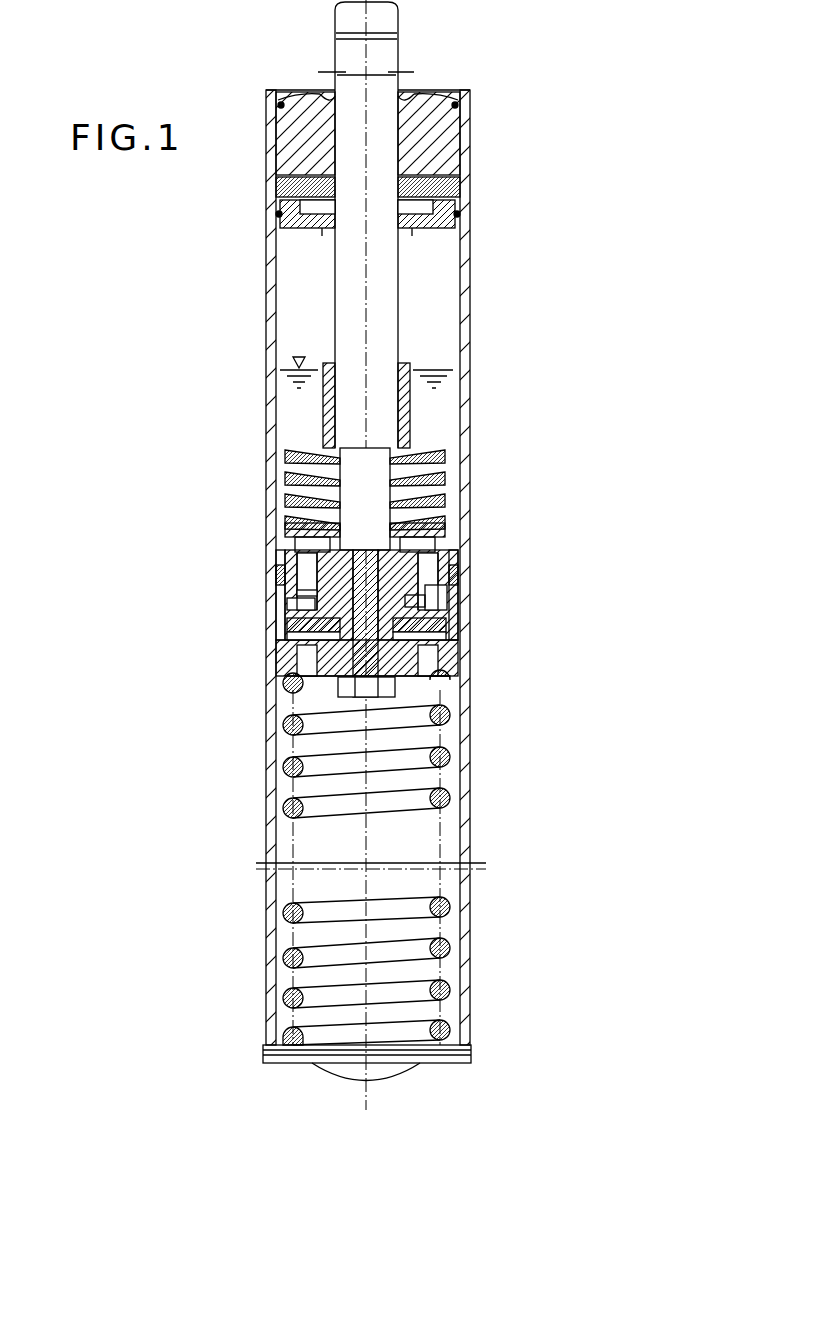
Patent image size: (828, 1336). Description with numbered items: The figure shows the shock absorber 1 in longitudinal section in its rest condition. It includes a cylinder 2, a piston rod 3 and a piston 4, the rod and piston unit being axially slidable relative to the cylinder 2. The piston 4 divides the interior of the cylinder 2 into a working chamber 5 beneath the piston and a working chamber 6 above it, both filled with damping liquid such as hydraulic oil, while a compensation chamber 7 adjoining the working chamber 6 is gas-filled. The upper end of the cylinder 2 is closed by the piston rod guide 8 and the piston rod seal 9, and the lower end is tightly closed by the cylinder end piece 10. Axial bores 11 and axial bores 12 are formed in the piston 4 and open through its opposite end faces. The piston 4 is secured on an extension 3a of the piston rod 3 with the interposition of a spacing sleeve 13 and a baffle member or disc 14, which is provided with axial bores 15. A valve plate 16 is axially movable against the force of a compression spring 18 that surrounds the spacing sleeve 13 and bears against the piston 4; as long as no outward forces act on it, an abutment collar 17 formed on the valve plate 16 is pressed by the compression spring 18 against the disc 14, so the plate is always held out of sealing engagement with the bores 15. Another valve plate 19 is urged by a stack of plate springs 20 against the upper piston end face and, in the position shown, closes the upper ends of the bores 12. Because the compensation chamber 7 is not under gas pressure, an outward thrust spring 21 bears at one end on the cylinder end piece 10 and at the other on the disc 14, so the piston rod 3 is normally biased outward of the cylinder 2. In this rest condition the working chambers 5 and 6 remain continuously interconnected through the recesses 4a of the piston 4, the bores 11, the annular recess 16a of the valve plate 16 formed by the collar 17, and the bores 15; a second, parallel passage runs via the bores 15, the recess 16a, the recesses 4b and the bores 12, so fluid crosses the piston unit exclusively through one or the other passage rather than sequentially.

The shock absorber 1 is at (255, 545).
The cylinder 2 is at (270, 282).
The piston rod 3 is at (388, 80).
The extension of the piston rod 3a is at (372, 565).
The piston 4 is at (443, 560).
The recesses of the piston 4a is at (295, 540).
The recesses of the piston 4b is at (418, 608).
The working chamber 5 is at (447, 780).
The working chamber 6 is at (450, 388).
The compensation chamber 7 is at (447, 273).
The piston rod guide 8 is at (300, 133).
The piston rod seal 9 is at (460, 186).
The cylinder end piece 10 is at (424, 1058).
The axial bores 11 is at (288, 602).
The axial bores 12 is at (452, 574).
The spacing sleeve 13 is at (425, 655).
The baffle member or disc 14 is at (282, 660).
The axial bores 15 is at (293, 683).
The valve plate 16 is at (430, 628).
The annular recess 16a is at (430, 637).
The abutment collar 17 is at (297, 641).
The compression spring 18 is at (297, 593).
The valve plate 19 is at (300, 530).
The stack of plate springs 20 is at (292, 492).
The outward thrust spring 21 is at (285, 812).